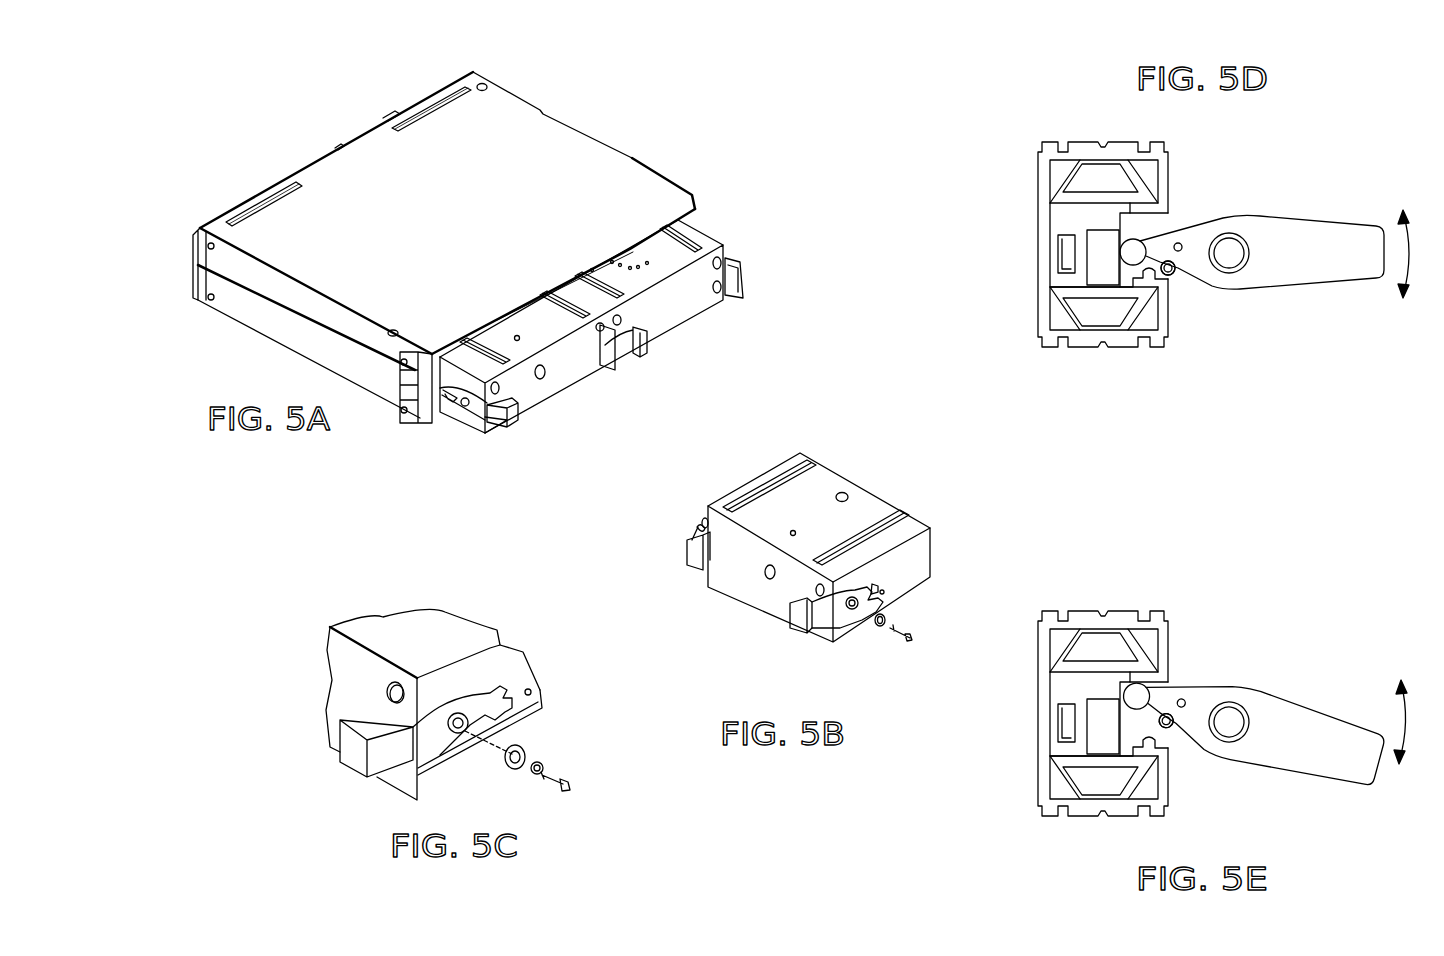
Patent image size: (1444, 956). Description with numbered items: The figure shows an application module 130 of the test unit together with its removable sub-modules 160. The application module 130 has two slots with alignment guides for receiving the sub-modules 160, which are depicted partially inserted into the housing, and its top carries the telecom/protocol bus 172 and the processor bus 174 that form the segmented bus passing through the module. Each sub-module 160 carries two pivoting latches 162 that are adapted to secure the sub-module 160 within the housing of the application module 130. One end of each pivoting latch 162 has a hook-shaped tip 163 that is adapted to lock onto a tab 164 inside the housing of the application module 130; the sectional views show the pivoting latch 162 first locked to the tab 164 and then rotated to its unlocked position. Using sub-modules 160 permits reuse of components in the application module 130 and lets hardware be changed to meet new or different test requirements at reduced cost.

In FIG. 5A, the application module 130 is at (583, 135).
In FIG. 5A, the sub-module 160 is at (713, 237).
In FIG. 5B, the sub-module 160 is at (850, 480).
In FIG. 5B, the pivoting latch 162 is at (687, 550).
In FIG. 5C, the pivoting latch 162 is at (350, 757).
In FIG. 5D, the pivoting latch 162 is at (1318, 230).
In FIG. 5E, the pivoting latch 162 is at (1323, 727).
In FIG. 5C, the hook-shaped tip 163 is at (517, 687).
In FIG. 5D, the hook-shaped tip 163 is at (1128, 250).
In FIG. 5E, the hook-shaped tip 163 is at (1133, 697).
In FIG. 5D, the tab 164 is at (1167, 237).
In FIG. 5E, the tab 164 is at (1162, 696).
In FIG. 5A, the telecom/protocol bus 172 is at (267, 183).
In FIG. 5A, the processor bus 174 is at (423, 105).